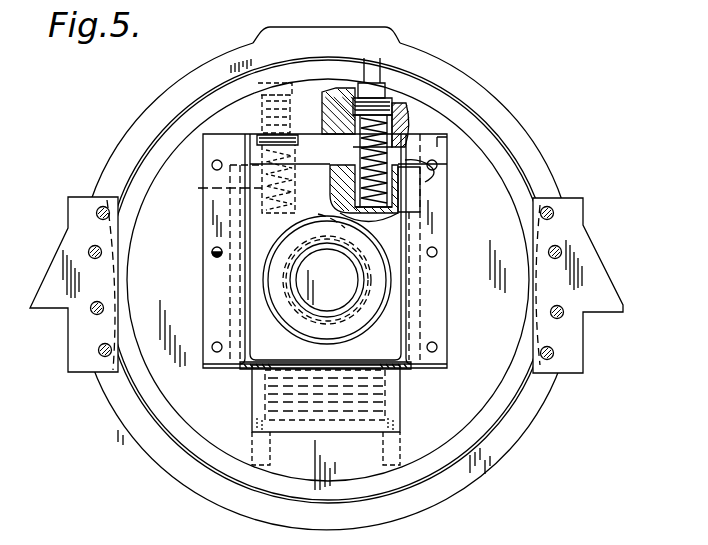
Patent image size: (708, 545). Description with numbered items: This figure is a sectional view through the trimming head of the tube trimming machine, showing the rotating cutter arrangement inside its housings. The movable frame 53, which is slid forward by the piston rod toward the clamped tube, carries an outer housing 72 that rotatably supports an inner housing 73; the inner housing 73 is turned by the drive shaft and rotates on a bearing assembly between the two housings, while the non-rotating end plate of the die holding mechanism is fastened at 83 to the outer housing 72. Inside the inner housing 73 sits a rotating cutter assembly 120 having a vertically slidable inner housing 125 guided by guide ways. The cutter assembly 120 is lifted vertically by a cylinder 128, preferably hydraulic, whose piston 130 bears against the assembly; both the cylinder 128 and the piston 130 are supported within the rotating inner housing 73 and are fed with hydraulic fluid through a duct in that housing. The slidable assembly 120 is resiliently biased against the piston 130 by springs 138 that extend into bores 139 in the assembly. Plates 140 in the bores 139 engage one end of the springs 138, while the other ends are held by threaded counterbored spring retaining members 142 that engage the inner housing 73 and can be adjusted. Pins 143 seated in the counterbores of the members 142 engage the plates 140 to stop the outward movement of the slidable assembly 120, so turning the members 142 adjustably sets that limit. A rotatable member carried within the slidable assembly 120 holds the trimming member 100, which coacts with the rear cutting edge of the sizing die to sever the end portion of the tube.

The movable frame 53 is at (72, 218).
The outer housing 72 is at (513, 132).
The inner housing 73 is at (466, 118).
The fastening 83 is at (92, 312).
The trimming member 100 is at (338, 283).
The rotating cutter assembly 120 is at (268, 354).
The vertically slidable inner housing 125 is at (397, 212).
The cylinder 128 is at (402, 408).
The piston 130 is at (345, 364).
The springs 138 is at (282, 150).
The bores 139 is at (449, 173).
The plates 140 is at (397, 212).
The threaded counterbored spring retaining members 142 is at (386, 95).
The pins 143 is at (258, 148).